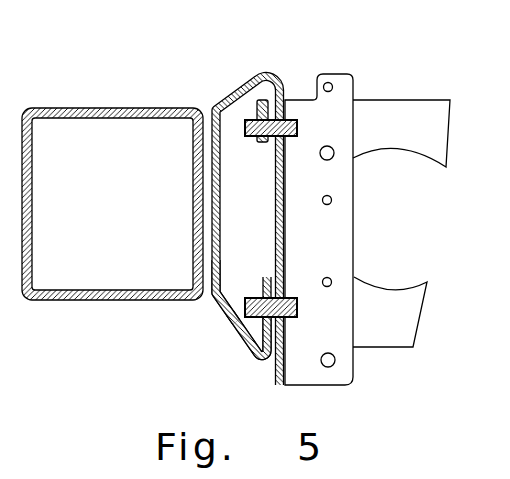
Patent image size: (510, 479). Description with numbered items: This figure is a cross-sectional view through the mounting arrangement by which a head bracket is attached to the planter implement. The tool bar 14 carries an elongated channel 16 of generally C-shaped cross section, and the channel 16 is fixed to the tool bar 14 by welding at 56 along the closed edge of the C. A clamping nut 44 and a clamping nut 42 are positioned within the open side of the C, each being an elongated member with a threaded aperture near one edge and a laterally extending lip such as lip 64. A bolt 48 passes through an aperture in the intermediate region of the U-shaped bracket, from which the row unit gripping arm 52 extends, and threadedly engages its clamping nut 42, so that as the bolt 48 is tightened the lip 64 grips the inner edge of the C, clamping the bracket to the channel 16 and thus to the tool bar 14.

The tool bar 14 is at (97, 108).
The elongated channel 16 is at (225, 92).
The clamping nut 42 is at (262, 326).
The clamping nut 44 is at (257, 92).
The bolt 48 is at (297, 303).
The row unit gripping arm 52 is at (345, 357).
The weld 56 is at (205, 302).
The lip 64 is at (274, 297).